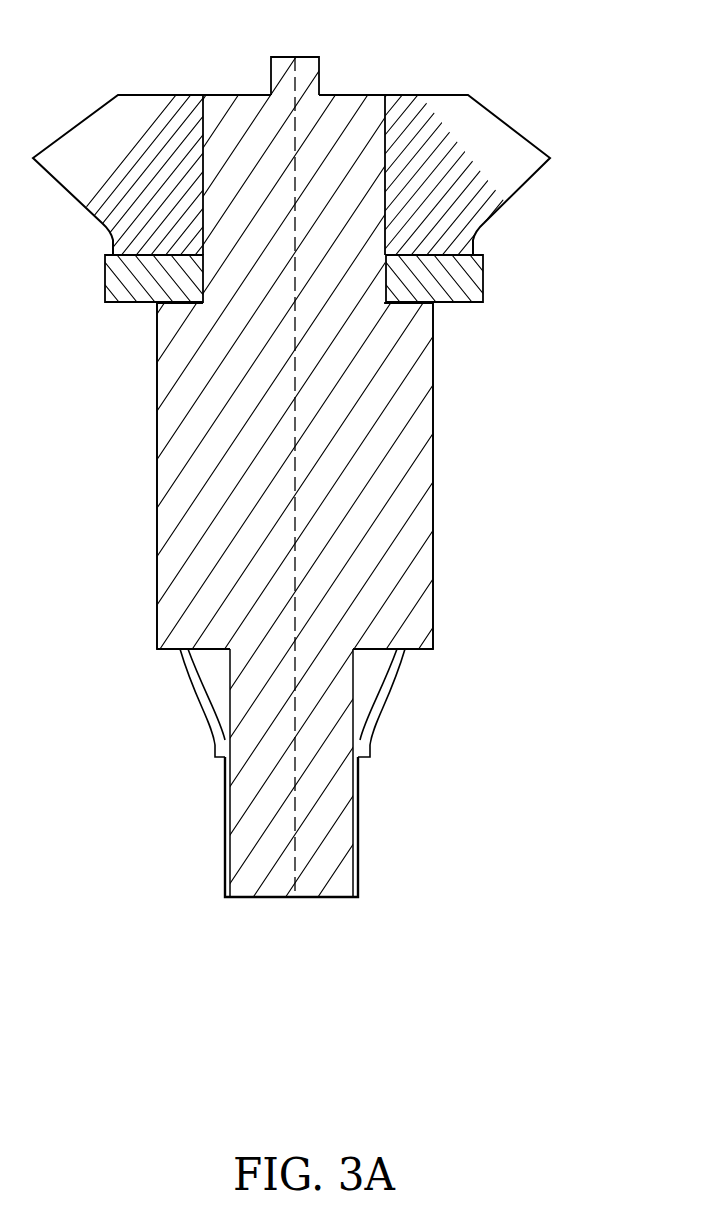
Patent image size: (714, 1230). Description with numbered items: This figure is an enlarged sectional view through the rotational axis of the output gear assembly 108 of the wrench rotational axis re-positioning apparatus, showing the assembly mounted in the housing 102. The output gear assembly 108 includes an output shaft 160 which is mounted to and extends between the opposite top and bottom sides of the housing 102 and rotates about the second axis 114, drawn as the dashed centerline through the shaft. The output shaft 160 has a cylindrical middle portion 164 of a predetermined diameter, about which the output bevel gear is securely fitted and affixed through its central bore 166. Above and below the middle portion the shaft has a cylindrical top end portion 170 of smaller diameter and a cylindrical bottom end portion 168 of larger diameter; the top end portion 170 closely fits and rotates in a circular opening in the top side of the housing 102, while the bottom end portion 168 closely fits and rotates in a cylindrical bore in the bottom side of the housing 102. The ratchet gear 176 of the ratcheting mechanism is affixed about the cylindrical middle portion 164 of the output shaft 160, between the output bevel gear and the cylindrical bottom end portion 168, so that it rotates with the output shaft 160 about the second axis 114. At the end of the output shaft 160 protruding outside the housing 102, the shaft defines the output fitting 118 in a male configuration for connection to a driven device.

The housing 102 is at (522, 131).
The output gear assembly 108 is at (513, 64).
The second axis 114 is at (293, 443).
The output fitting 118 is at (277, 888).
The output shaft 160 is at (437, 442).
The cylindrical middle portion 164 is at (342, 100).
The central bore 166 is at (207, 117).
The cylindrical bottom end portion 168 is at (428, 568).
The cylindrical top end portion 170 is at (298, 62).
The ratchet gear 176 is at (485, 283).